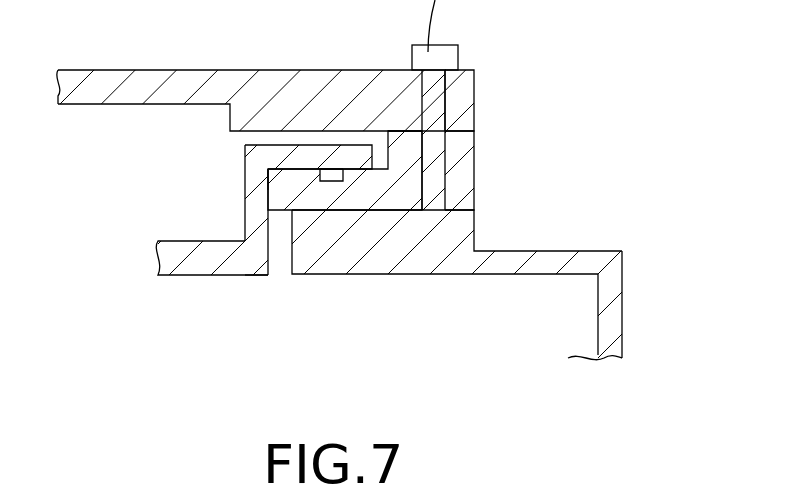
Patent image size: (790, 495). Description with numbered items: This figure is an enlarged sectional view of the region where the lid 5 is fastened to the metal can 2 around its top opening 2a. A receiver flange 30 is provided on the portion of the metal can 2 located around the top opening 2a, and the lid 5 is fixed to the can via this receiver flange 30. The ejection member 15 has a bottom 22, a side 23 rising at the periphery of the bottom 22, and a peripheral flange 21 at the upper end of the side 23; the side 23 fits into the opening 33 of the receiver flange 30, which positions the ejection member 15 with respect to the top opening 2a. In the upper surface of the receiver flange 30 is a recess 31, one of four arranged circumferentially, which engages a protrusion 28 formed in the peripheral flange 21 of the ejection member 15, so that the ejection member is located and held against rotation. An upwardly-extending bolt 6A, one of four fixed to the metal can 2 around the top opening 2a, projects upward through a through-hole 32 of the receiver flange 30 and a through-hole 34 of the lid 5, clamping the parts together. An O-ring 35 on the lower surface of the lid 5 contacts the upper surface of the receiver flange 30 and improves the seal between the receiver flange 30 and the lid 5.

The metal can 2 is at (623, 270).
The top opening 2a is at (450, 235).
The lid 5 is at (470, 90).
The bolt 6A is at (437, 83).
The ejection member 15 is at (254, 288).
The peripheral flange 21 is at (280, 153).
The bottom 22 is at (190, 268).
The side 23 is at (253, 200).
The protrusion 28 is at (318, 173).
The receiver flange 30 is at (470, 178).
The recess 31 is at (338, 160).
The through-hole of receiver flange 32 is at (442, 185).
The opening 33 is at (263, 182).
The through-hole of lid 34 is at (437, 136).
The O-ring 35 is at (398, 120).